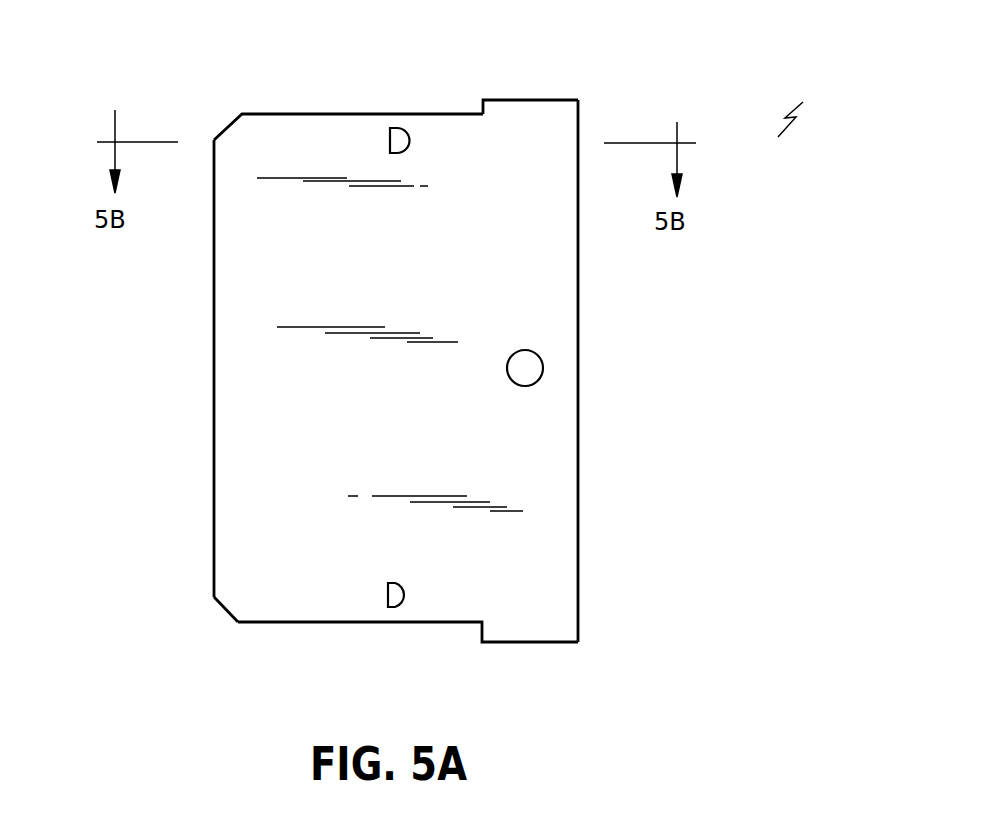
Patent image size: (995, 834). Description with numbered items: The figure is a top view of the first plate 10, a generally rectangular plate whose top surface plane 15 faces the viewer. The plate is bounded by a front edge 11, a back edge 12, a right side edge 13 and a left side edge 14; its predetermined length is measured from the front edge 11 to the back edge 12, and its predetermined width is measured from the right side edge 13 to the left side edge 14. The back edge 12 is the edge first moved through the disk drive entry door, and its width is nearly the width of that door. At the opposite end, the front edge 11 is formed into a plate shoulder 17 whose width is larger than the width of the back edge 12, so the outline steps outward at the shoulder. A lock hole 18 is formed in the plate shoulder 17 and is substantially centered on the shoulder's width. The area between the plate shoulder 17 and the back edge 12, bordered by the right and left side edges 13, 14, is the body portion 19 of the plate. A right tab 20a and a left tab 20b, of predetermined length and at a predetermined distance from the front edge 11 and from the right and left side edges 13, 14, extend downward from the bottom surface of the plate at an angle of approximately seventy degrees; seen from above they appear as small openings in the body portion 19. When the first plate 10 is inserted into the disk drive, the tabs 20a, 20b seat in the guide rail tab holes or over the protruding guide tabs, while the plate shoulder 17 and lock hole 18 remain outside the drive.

The first plate 10 is at (805, 104).
The front edge 11 is at (578, 423).
The back edge 12 is at (213, 470).
The right side edge 13 is at (330, 113).
The left side edge 14 is at (292, 622).
The top surface plane 15 is at (355, 263).
The plate shoulder 17 is at (537, 118).
The lock hole 18 is at (527, 386).
The body portion 19 is at (235, 553).
The right tab 20a is at (398, 130).
The left tab 20b is at (407, 586).